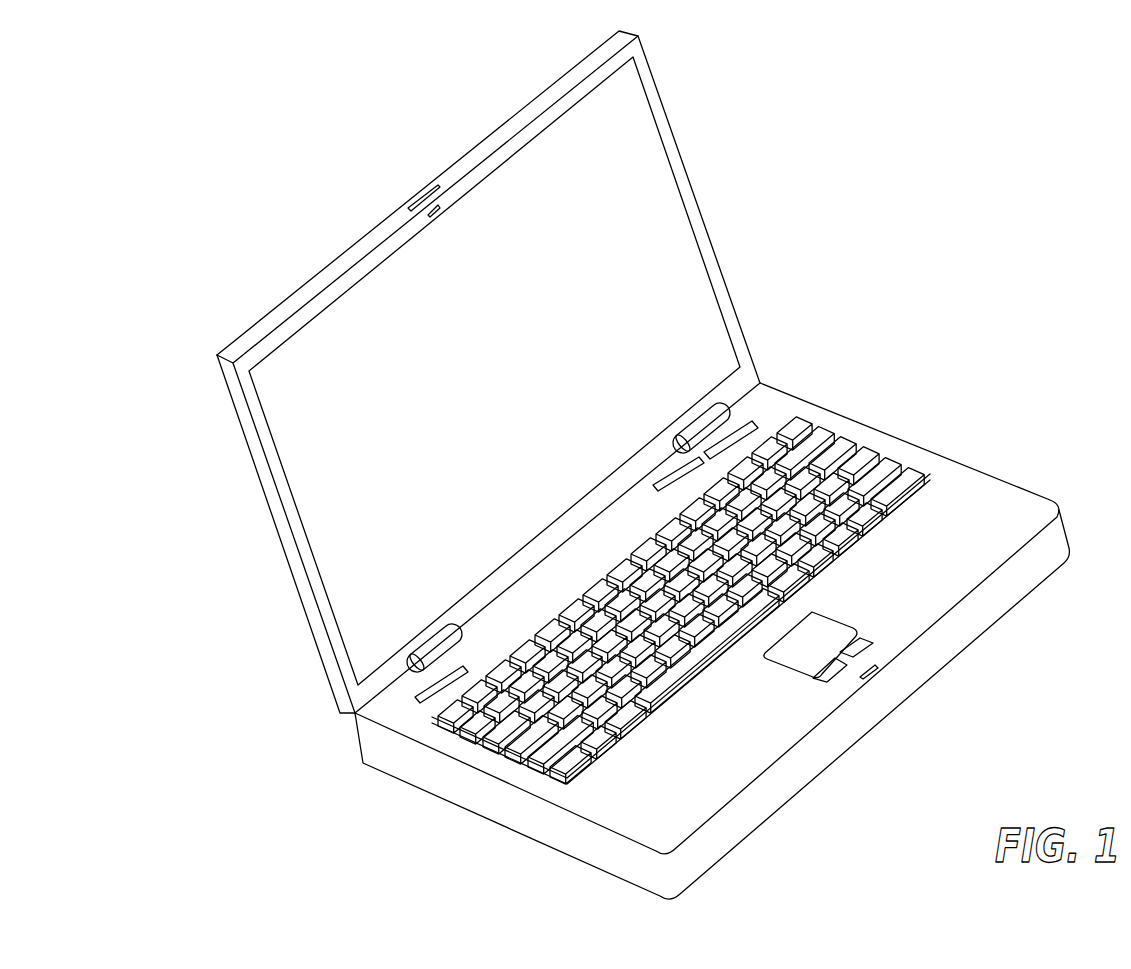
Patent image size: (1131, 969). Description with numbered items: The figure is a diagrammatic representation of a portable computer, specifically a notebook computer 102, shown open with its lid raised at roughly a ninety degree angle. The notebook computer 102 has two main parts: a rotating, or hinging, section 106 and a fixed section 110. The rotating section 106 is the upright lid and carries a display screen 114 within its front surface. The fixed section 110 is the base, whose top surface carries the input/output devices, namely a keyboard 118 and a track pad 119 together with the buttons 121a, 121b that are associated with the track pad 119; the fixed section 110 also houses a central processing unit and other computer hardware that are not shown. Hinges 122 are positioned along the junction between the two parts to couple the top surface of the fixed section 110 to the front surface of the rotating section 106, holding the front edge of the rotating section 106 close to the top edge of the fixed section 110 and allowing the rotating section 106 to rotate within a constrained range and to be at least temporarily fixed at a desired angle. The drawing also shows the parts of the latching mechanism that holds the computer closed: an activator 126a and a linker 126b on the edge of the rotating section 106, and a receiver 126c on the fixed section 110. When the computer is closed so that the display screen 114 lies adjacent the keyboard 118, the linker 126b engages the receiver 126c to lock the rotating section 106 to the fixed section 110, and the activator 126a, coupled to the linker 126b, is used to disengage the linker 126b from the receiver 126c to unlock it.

The notebook computer 102 is at (1016, 186).
The rotating section 106 is at (298, 592).
The fixed section 110 is at (668, 830).
The display screen 114 is at (625, 240).
The keyboard 118 is at (558, 773).
The track pad 119 is at (828, 632).
The button 121a is at (833, 673).
The button 121b is at (863, 647).
The hinge 122 is at (725, 415).
The activator 126a is at (413, 202).
The linker 126b is at (430, 207).
The receiver 126c is at (875, 672).